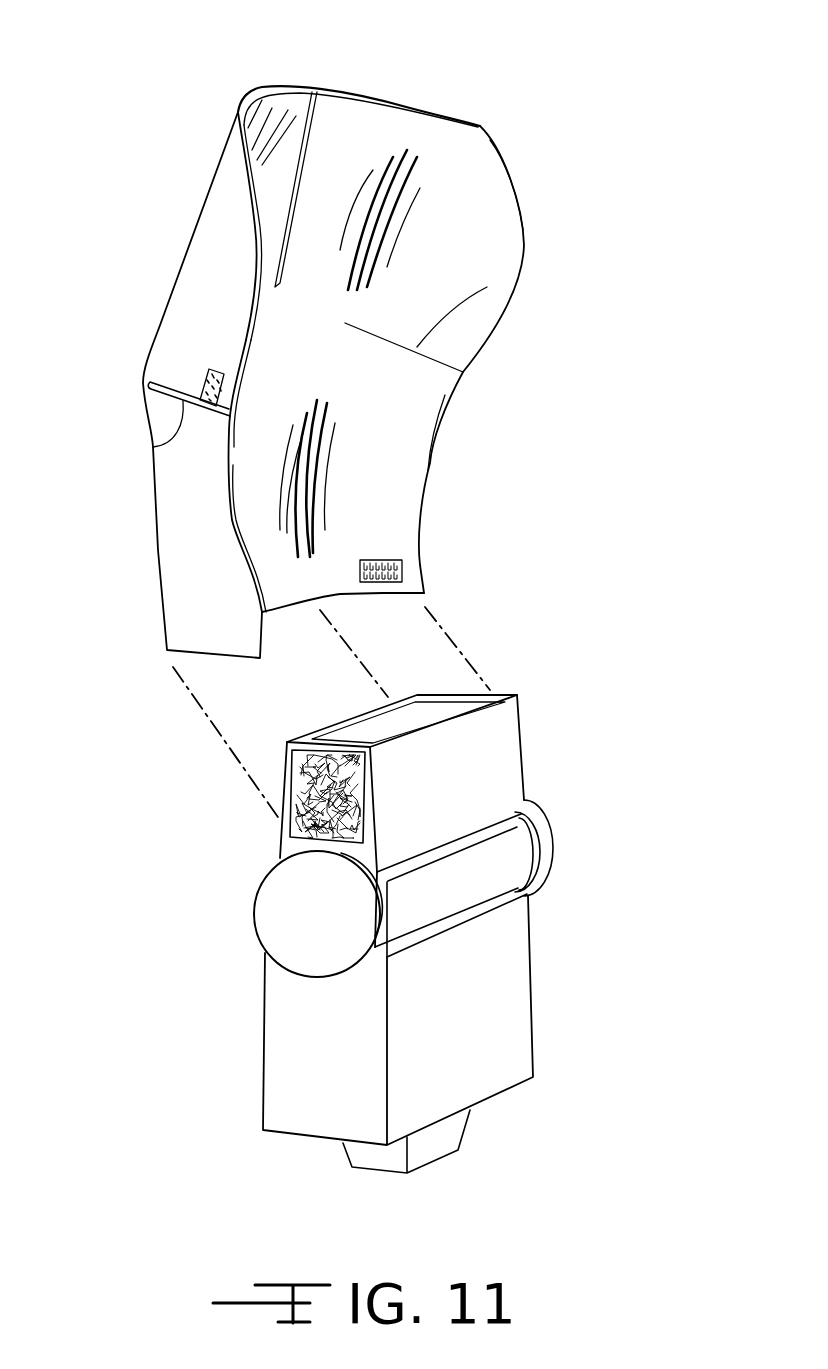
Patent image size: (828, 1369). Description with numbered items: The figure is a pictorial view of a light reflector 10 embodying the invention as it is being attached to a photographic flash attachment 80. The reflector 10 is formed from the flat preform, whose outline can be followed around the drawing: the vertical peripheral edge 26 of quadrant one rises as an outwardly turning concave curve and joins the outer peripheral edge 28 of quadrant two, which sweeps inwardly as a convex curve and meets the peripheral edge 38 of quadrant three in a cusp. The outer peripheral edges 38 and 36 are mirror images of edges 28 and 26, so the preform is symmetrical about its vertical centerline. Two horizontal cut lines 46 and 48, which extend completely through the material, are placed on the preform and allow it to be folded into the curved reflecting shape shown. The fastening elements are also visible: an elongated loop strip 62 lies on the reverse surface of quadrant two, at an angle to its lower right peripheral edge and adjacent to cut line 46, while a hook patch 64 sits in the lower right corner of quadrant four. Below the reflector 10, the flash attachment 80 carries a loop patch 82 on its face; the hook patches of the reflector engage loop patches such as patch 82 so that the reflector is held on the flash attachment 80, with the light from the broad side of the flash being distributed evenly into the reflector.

The reflector 10 is at (397, 102).
The vertical peripheral edge 26 is at (230, 507).
The outer peripheral edge 28 is at (247, 252).
The outer peripheral edge 36 is at (433, 463).
The peripheral edge 38 is at (510, 180).
The horizontal cut line 46 is at (153, 447).
The horizontal cut line 48 is at (487, 287).
The VELCRO loop strip 62 is at (207, 369).
The VELCRO J hook patch 64 is at (402, 570).
The flash attachment 80 is at (408, 934).
The VELCRO J-loop patch 82 is at (300, 823).